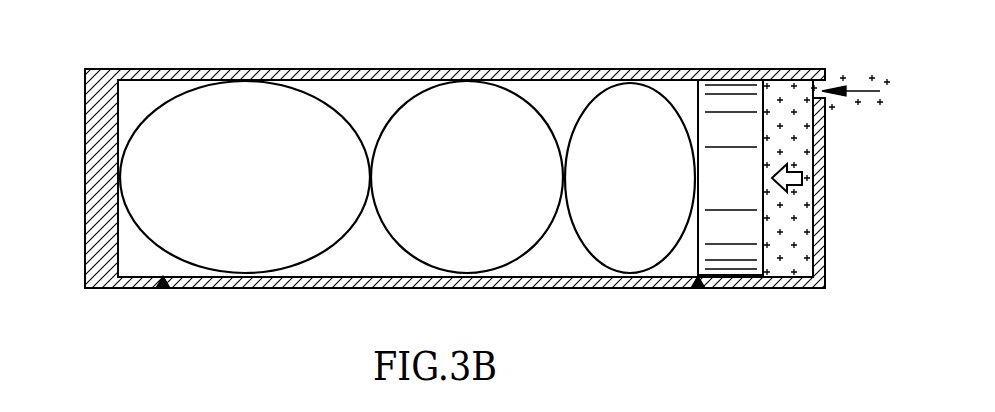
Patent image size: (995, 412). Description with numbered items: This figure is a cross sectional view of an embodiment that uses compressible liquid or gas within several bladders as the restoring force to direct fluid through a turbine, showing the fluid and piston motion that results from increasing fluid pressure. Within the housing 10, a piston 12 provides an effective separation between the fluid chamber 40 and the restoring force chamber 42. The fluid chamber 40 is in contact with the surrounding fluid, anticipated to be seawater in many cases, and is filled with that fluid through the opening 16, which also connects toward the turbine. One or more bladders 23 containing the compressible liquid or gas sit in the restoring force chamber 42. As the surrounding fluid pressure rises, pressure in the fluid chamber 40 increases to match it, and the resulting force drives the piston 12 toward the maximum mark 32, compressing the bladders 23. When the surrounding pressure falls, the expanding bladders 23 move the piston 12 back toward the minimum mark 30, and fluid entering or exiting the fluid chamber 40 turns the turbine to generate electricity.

The housing 10 is at (380, 68).
The restoring force chamber 42 is at (140, 90).
The bladders 23 is at (233, 240).
The piston 12 is at (727, 88).
The fluid chamber 40 is at (778, 87).
The opening 16 is at (821, 95).
The maximum mark 32 is at (160, 288).
The minimum mark 30 is at (698, 288).